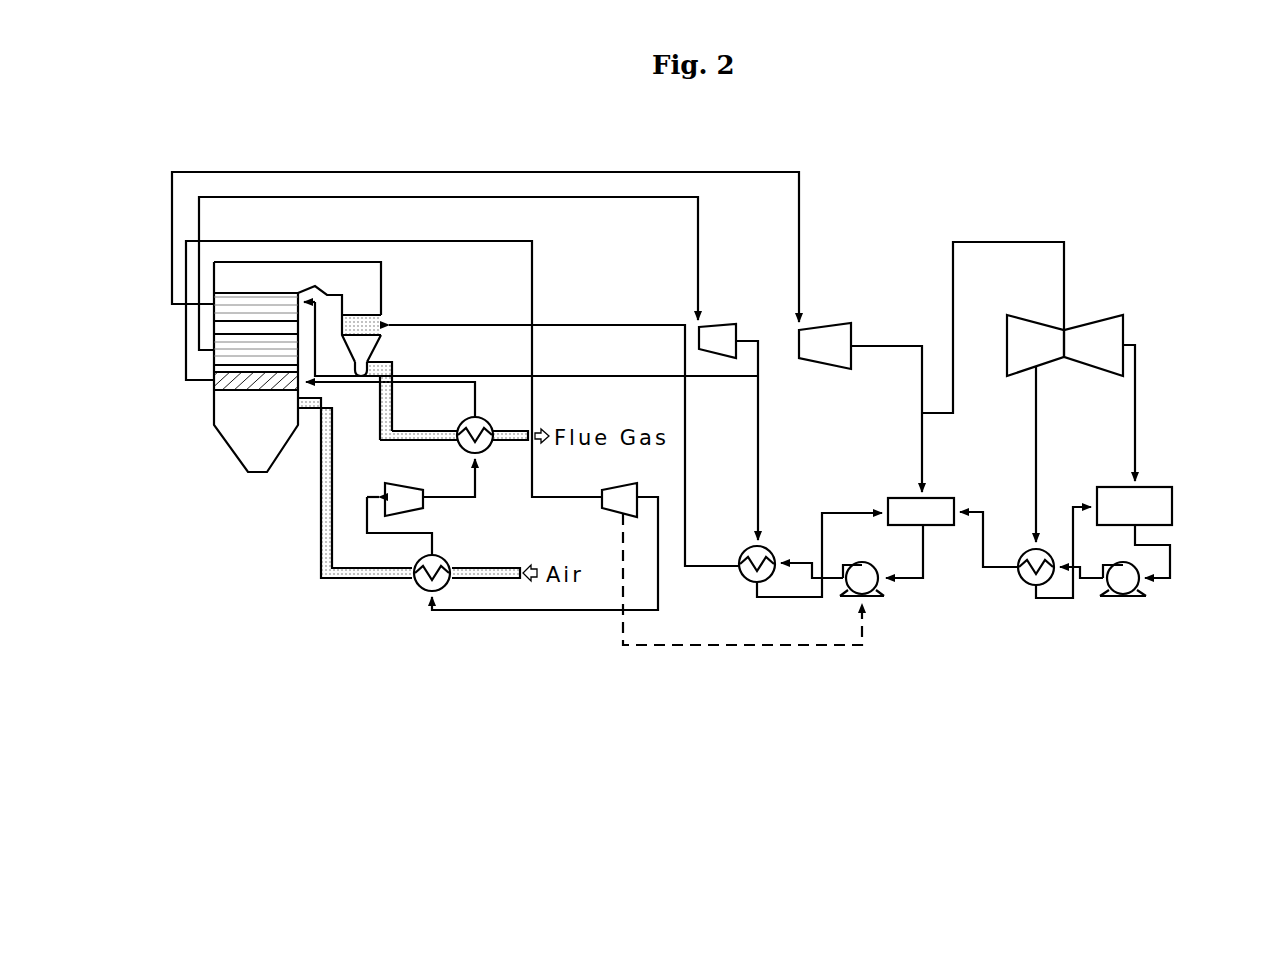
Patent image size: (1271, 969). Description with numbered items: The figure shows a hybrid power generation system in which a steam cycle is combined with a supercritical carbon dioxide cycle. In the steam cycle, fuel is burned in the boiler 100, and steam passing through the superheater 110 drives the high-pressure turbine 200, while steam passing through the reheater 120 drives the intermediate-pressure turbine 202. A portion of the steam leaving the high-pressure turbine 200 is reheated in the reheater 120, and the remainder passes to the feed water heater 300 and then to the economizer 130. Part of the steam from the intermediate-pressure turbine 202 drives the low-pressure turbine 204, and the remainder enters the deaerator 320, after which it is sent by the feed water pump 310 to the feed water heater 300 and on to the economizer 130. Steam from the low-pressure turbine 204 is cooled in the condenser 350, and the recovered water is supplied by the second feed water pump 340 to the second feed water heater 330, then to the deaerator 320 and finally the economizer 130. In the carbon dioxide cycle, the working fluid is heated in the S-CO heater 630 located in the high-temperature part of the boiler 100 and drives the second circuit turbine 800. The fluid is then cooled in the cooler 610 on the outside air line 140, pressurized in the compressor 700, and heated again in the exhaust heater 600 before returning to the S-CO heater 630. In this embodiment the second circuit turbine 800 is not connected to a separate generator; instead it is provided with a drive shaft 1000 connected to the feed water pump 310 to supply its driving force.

The boiler 100 is at (244, 395).
The superheater 110 is at (240, 355).
The reheater 120 is at (239, 313).
The economizer 130 is at (362, 315).
The outside air line 140 is at (320, 542).
The high-pressure turbine 200 is at (716, 322).
The intermediate-pressure turbine 202 is at (825, 326).
The low-pressure turbine 204 is at (1092, 323).
The feed water heater 300 is at (747, 580).
The feed water pump 310 is at (887, 597).
The deaerator 320 is at (907, 497).
The second feed water heater 330 is at (1023, 579).
The second feed water pump 340 is at (1124, 597).
The condenser 350 is at (1173, 504).
The exhaust heater 600 is at (462, 448).
The cooler 610 is at (419, 586).
The S-CO heater 630 is at (243, 389).
The compressor 700 is at (423, 510).
The second circuit turbine 800 is at (621, 513).
The drive shaft 1000 is at (743, 648).